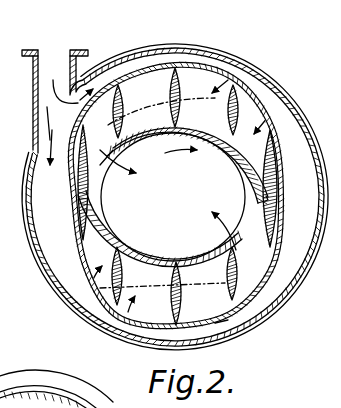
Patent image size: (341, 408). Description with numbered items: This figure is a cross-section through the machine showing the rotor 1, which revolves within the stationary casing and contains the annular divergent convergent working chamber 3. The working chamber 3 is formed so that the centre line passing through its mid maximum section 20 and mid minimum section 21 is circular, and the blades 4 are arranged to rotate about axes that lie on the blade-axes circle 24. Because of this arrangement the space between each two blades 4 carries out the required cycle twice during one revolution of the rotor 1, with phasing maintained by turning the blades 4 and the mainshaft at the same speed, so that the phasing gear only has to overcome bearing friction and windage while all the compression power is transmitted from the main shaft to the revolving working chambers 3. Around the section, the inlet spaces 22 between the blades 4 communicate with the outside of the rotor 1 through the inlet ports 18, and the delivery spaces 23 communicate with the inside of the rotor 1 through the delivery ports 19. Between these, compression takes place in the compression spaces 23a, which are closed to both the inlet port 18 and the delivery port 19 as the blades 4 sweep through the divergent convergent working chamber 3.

The rotor 1 is at (256, 248).
The divergent convergent working chamber 3 is at (145, 80).
The blades 4 is at (238, 112).
The inlet port 18 is at (255, 128).
The delivery port 19 is at (97, 163).
The mid maximum section 20 is at (222, 327).
The mid minimum section 21 is at (268, 200).
The inlet spaces 22 is at (181, 100).
The delivery spaces 23 is at (103, 119).
The compression spaces 23a is at (124, 112).
The blade-axes circle 24 is at (194, 98).